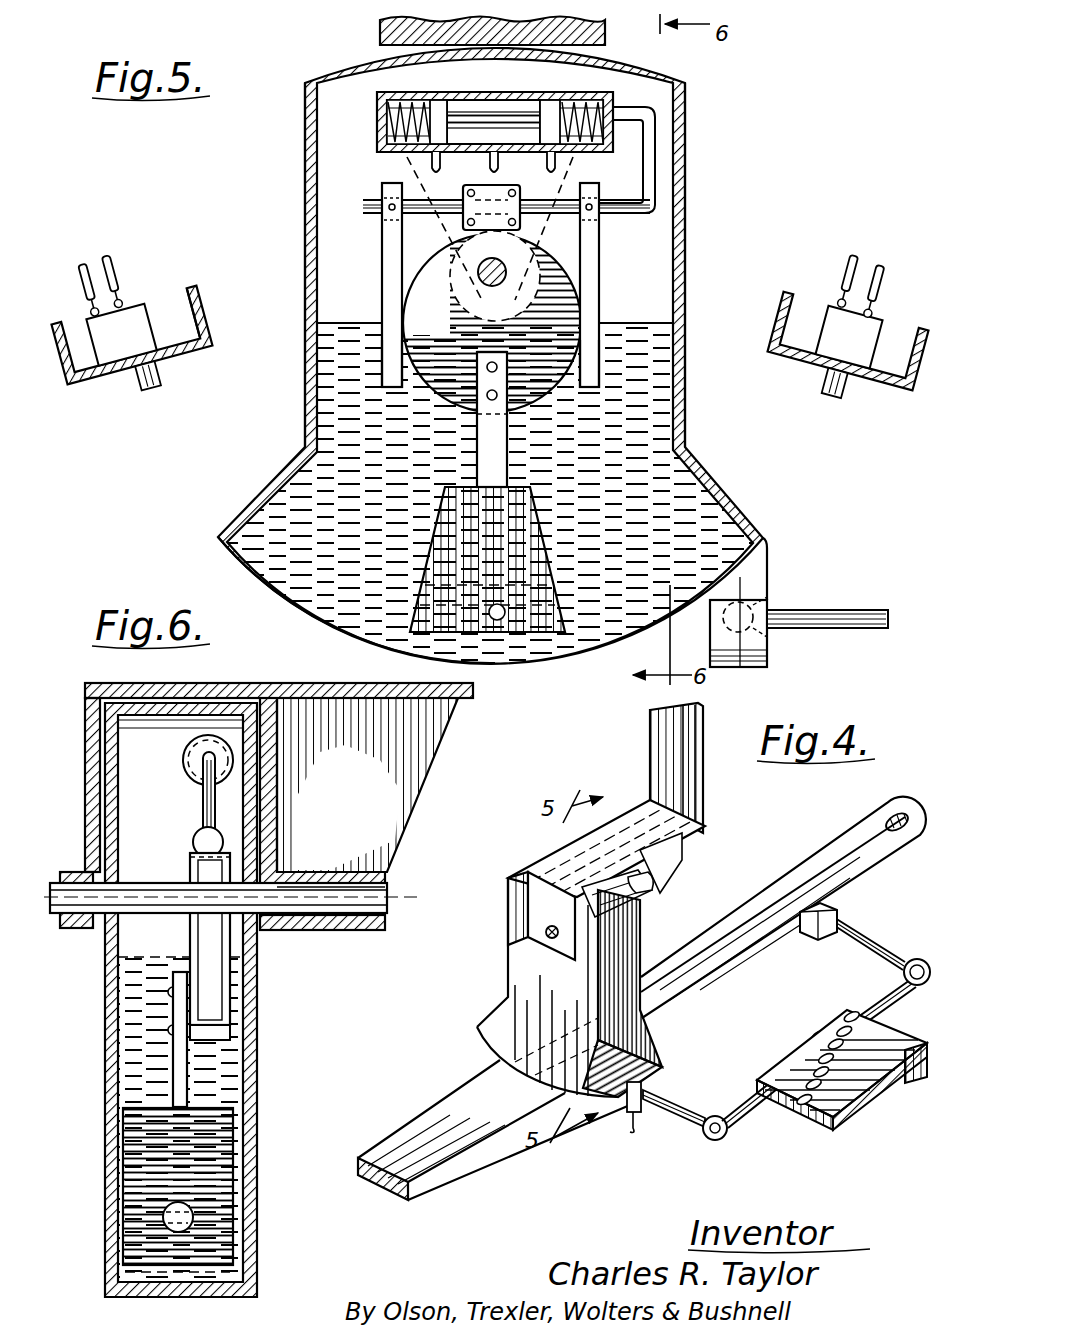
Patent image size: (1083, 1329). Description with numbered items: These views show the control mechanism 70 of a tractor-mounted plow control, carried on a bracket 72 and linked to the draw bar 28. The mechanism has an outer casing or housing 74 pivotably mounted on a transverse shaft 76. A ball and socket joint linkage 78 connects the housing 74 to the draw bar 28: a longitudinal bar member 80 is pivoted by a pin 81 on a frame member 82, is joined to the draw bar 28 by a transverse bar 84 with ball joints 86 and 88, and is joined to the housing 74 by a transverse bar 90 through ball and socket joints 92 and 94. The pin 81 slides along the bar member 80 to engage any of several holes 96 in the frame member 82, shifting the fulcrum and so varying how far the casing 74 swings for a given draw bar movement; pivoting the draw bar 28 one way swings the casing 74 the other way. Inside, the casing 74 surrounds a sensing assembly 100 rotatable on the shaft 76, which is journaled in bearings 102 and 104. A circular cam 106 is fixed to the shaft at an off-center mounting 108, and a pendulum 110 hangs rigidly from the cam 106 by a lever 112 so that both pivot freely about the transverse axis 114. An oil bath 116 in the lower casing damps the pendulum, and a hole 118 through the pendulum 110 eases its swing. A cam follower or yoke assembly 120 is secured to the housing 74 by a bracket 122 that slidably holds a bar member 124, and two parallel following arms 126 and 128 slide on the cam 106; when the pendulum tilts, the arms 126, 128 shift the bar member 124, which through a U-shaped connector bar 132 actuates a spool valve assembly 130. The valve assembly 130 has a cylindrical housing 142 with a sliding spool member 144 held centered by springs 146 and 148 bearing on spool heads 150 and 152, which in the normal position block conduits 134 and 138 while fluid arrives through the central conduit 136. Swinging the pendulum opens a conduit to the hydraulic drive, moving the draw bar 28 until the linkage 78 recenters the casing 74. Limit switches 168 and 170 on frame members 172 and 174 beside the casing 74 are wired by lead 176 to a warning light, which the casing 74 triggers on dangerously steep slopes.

In FIG. 4, the draw bar 28 is at (378, 1165).
In FIG. 5, the control mechanism 70 is at (778, 224).
In FIG. 4, the control mechanism 70 is at (495, 937).
In FIG. 5, the bracket 72 is at (397, 35).
In FIG. 6, the bracket 72 is at (289, 680).
In FIG. 4, the bracket 72 is at (668, 754).
In FIG. 5, the outer casing or housing 74 is at (683, 306).
In FIG. 6, the outer casing or housing 74 is at (247, 1017).
In FIG. 4, the outer casing or housing 74 is at (500, 1048).
In FIG. 5, the shaft 76 is at (478, 272).
In FIG. 6, the shaft 76 is at (47, 916).
In FIG. 4, the shaft 76 is at (545, 932).
In FIG. 4, the ball and socket joint linkage 78 is at (777, 1117).
In FIG. 4, the bar member 80 is at (785, 1072).
In FIG. 4, the pin 81 is at (812, 1040).
In FIG. 4, the frame member 82 is at (830, 1100).
In FIG. 4, the transversely extending bar 84 is at (865, 948).
In FIG. 4, the ball joint 86 is at (815, 905).
In FIG. 4, the ball joint 88 is at (917, 960).
In FIG. 4, the transversely extending bar 90 is at (672, 1122).
In FIG. 5, the ball and socket joint 92 is at (783, 605).
In FIG. 4, the ball and socket joint 92 is at (634, 1125).
In FIG. 4, the ball and socket joint 94 is at (710, 1116).
In FIG. 4, the holes or apertures 96 is at (858, 1047).
In FIG. 5, the sensing assembly 100 is at (405, 395).
In FIG. 6, the sensing assembly 100 is at (173, 950).
In FIG. 6, the bearing 102 is at (76, 872).
In FIG. 6, the bearing 104 is at (343, 873).
In FIG. 5, the circular cam 106 is at (537, 385).
In FIG. 6, the circular cam 106 is at (213, 1040).
In FIG. 5, the radially off-center mounting 108 is at (482, 325).
In FIG. 5, the pendulum 110 is at (505, 562).
In FIG. 6, the pendulum 110 is at (147, 1200).
In FIG. 5, the lever 112 is at (494, 452).
In FIG. 6, the lever 112 is at (178, 1075).
In FIG. 6, the transversely extending axis 114 is at (345, 903).
In FIG. 5, the bath of oil 116 is at (250, 541).
In FIG. 5, the hole 118 is at (512, 648).
In FIG. 6, the hole 118 is at (183, 1227).
In FIG. 5, the cam follower or yoke assembly 120 is at (615, 252).
In FIG. 6, the cam follower or yoke assembly 120 is at (190, 868).
In FIG. 5, the bracket 122 is at (463, 213).
In FIG. 5, the bar member 124 is at (565, 210).
In FIG. 5, the following arm 126 is at (382, 363).
In FIG. 5, the following arm 128 is at (590, 362).
In FIG. 6, the following arm 128 is at (210, 1002).
In FIG. 5, the spool valve assembly 130 is at (376, 129).
In FIG. 5, the U-shaped connector bar 132 is at (656, 150).
In FIG. 6, the U-shaped connector bar 132 is at (203, 810).
In FIG. 5, the conduit 134 is at (430, 165).
In FIG. 5, the central conduit 136 is at (492, 170).
In FIG. 5, the conduit 138 is at (553, 168).
In FIG. 5, the cylindrical housing 142 is at (683, 107).
In FIG. 5, the spool member 144 is at (512, 75).
In FIG. 5, the spring 146 is at (383, 118).
In FIG. 5, the spring 148 is at (577, 100).
In FIG. 5, the spool head 150 is at (392, 98).
In FIG. 5, the spool head 152 is at (543, 103).
In FIG. 5, the limit switch 168 is at (155, 288).
In FIG. 5, the limit switch 170 is at (830, 313).
In FIG. 5, the frame member 172 is at (207, 297).
In FIG. 5, the frame member 174 is at (845, 388).
In FIG. 5, the lead 176 is at (117, 318).